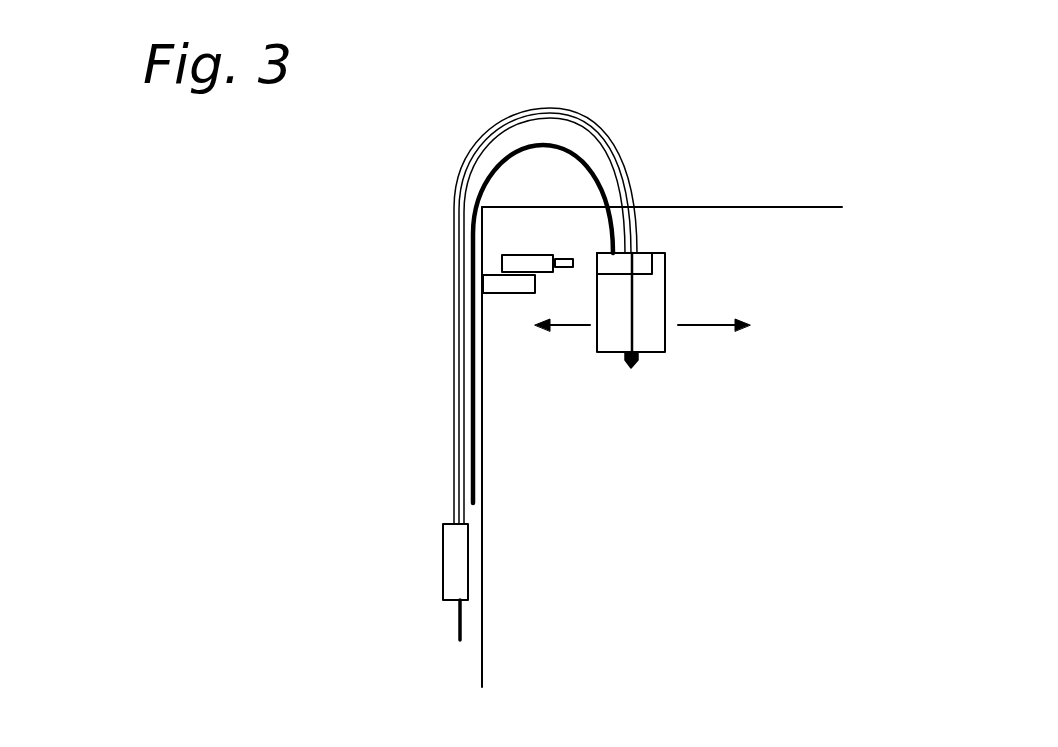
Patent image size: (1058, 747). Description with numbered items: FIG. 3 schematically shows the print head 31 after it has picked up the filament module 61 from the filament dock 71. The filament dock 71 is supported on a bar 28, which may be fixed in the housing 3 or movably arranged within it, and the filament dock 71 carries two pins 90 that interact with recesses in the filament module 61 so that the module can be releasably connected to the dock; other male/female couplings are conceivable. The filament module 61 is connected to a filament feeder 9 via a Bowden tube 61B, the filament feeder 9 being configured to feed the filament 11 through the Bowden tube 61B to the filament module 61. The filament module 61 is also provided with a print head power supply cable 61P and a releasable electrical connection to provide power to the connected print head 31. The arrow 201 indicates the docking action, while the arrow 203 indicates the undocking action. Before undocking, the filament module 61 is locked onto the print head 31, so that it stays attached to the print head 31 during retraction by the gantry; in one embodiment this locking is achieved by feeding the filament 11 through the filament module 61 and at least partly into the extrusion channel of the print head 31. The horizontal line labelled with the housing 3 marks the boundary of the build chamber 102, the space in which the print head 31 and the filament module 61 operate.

The housing 3 is at (783, 207).
The Bowden tube 61B is at (609, 150).
The print head power supply cable 61P is at (542, 145).
The filament module 61 is at (647, 253).
The print head 31 is at (620, 354).
The filament dock 71 is at (513, 255).
The pins 90 is at (565, 259).
The bar 28 is at (488, 283).
The arrow indicating docking action 201 is at (567, 327).
The arrow indicating undocking action 203 is at (693, 326).
The filament feeder 9 is at (448, 553).
The filament 11 is at (458, 630).
The build chamber 102 is at (716, 481).